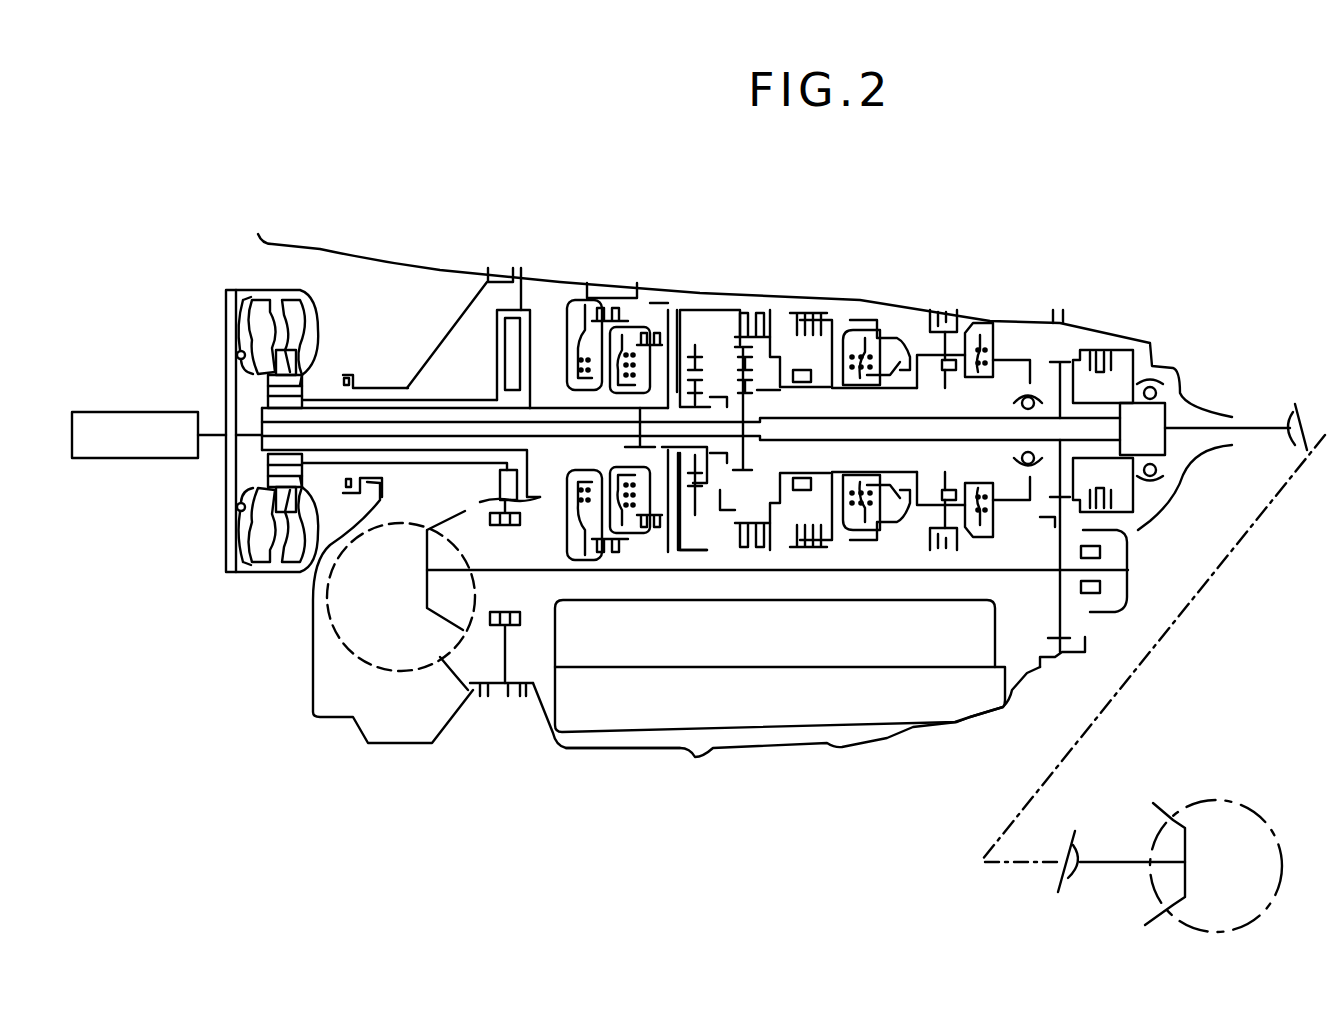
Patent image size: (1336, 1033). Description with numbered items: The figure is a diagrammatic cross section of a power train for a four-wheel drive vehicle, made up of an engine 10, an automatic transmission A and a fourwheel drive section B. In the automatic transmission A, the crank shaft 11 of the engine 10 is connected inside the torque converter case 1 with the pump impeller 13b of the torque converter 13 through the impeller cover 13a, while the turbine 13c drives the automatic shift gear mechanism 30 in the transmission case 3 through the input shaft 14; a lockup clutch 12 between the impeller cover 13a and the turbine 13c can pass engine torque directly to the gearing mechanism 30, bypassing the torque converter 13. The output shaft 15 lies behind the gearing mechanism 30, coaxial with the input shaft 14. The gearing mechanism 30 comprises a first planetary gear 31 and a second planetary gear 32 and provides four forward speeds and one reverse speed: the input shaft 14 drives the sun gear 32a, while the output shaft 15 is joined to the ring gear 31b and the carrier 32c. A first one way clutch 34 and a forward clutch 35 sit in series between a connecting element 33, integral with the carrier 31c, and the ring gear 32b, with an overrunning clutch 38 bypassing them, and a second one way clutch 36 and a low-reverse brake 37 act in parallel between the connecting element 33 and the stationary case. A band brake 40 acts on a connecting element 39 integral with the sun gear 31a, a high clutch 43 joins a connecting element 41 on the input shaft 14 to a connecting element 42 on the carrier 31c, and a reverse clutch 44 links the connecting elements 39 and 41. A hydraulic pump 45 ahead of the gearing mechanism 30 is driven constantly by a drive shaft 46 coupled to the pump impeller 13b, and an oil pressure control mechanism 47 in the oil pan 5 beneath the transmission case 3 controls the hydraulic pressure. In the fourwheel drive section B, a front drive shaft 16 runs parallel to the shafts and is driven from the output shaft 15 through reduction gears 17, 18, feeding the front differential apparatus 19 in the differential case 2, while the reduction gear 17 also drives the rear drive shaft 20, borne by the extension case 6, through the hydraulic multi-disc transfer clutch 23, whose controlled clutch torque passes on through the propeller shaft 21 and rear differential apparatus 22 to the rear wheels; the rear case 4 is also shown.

The torque converter case 1 is at (397, 266).
The differential case 2 is at (447, 718).
The transmission case 3 is at (540, 292).
The rear case 4 is at (1086, 324).
The oil pan 5 is at (857, 748).
The extension case 6 is at (1190, 400).
The engine 10 is at (128, 400).
The crank shaft 11 is at (218, 432).
The lockup clutch 12 is at (234, 327).
The torque converter 13 is at (257, 373).
The impeller cover 13a is at (252, 298).
The pump impeller 13b is at (308, 308).
The turbine 13c is at (262, 300).
The input shaft 14 is at (372, 420).
The output shaft 15 is at (957, 418).
The front drive shaft 16 is at (883, 570).
The reduction gear 17 is at (1060, 362).
The reduction gear 18 is at (1062, 640).
The front differential apparatus 19 is at (465, 692).
The rear drive shaft 20 is at (1260, 422).
The propeller shaft 21 is at (1030, 862).
The rear differential apparatus 22 is at (1218, 802).
The transfer clutch 23 is at (1123, 350).
The automatic shift gear mechanism 30 is at (796, 286).
The first planetary gear 31 is at (765, 438).
The sun gear 31a is at (696, 462).
The ring gear 31b is at (686, 340).
The carrier 31c is at (661, 297).
The second planetary gear 32 is at (722, 380).
The sun gear 32a is at (745, 445).
The ring gear 32b is at (768, 315).
The carrier 32c is at (757, 390).
The connecting element 33 is at (721, 293).
The first one way clutch 34 is at (808, 378).
The forward clutch 35 is at (731, 298).
The second one way clutch 36 is at (941, 380).
The low-reverse brake 37 is at (943, 305).
The overrunning clutch 38 is at (825, 298).
The connecting element 39 is at (653, 300).
The band brake 40 is at (597, 292).
The connecting element 41 is at (632, 400).
The connecting element 42 is at (655, 393).
The high clutch 43 is at (660, 310).
The reverse clutch 44 is at (612, 298).
The hydraulic pump 45 is at (508, 367).
The drive shaft 46 is at (398, 400).
The oil pressure control mechanism 47 is at (678, 718).
The automatic transmission A is at (410, 303).
The fourwheel drive section B is at (1142, 524).